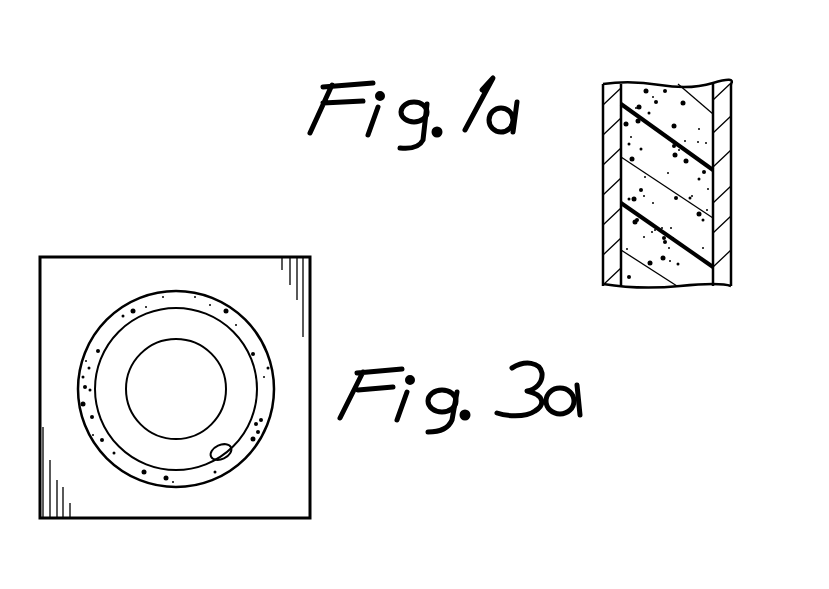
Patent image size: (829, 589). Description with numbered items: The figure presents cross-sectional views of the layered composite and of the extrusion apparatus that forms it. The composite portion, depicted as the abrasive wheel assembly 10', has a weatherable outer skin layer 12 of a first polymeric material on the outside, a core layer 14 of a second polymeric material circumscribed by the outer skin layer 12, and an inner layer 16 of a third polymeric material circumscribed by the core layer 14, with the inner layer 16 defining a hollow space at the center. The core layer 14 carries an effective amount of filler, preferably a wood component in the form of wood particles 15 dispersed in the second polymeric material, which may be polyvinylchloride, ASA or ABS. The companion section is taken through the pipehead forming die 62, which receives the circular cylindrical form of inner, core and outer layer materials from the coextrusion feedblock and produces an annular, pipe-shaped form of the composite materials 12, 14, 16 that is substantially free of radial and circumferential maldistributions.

In FIG. 3a, the abrasive wheel assembly 10' is at (227, 381).
In FIG. 1a, the outer skin layer 12 is at (653, 179).
In FIG. 3a, the outer skin layer 12 is at (227, 393).
In FIG. 1a, the core layer 14 is at (681, 272).
In FIG. 3a, the core layer 14 is at (265, 373).
In FIG. 1a, the wood particles 15 is at (682, 103).
In FIG. 1a, the inner layer 16 is at (600, 189).
In FIG. 3a, the inner layer 16 is at (237, 457).
In FIG. 3a, the pipehead forming die 62 is at (315, 289).